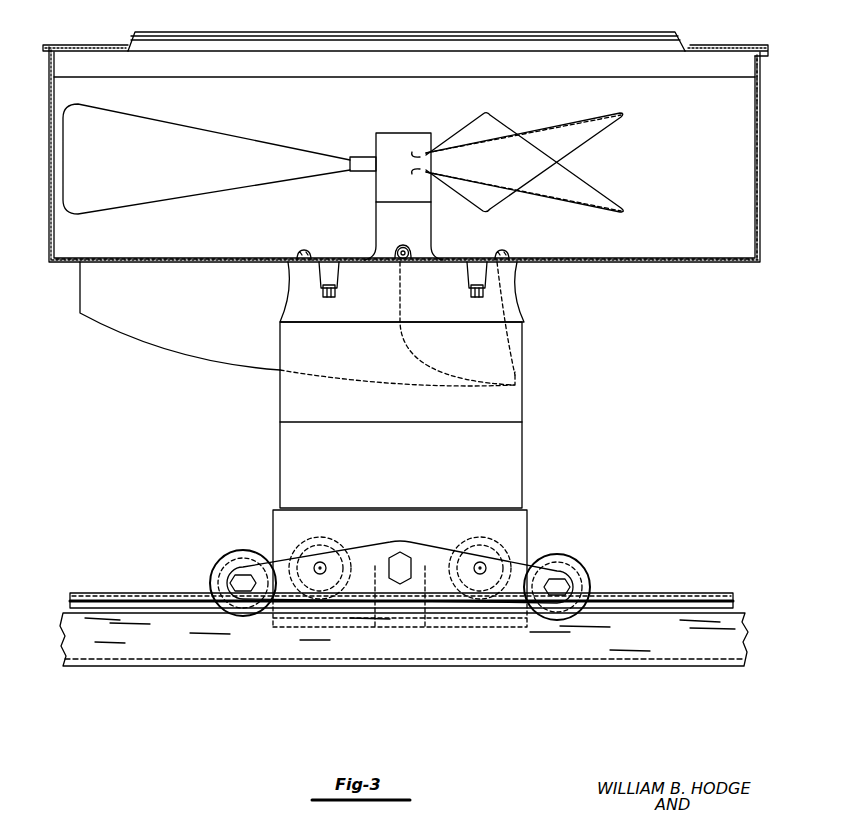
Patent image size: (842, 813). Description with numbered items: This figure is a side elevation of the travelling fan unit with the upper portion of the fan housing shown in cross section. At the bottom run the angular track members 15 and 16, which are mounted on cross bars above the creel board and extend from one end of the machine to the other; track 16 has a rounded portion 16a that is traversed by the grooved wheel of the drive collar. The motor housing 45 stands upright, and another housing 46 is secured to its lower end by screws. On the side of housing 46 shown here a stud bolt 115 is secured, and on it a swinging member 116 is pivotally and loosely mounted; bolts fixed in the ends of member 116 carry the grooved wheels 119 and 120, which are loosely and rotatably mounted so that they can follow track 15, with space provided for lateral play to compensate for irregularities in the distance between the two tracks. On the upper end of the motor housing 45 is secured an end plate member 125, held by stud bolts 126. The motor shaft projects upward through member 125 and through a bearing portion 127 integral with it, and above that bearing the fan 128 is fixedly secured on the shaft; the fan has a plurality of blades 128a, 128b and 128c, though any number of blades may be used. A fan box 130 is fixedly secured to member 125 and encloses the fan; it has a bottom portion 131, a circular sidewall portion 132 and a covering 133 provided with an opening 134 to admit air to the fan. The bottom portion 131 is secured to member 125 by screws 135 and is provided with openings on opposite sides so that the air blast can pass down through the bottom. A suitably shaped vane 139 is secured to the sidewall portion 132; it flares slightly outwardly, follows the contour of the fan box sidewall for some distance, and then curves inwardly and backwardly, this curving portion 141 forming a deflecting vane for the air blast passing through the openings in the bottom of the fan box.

The angular track member 15 is at (72, 632).
The angular track member 16 is at (401, 582).
The rounded portion of track 16a is at (95, 600).
The motor housing 45 is at (508, 478).
The housing 46 is at (520, 535).
The stud bolt 115 is at (401, 563).
The swinging member 116 is at (382, 528).
The grooved wheel 119 is at (585, 580).
The grooved wheel 120 is at (224, 562).
The end plate member of motor housing 125 is at (512, 304).
The stud bolt 126 is at (327, 297).
The bearing portion 127 is at (422, 234).
The fan 128 is at (365, 155).
The fan blade 128a is at (208, 188).
The fan blade 128b is at (608, 117).
The fan blade 128c is at (608, 209).
The fan box 130 is at (405, 148).
The bottom portion of fan box 131 is at (664, 243).
The circular sidewall portion 132 is at (755, 189).
The covering 133 is at (712, 50).
The opening 134 is at (347, 12).
The screw 135 is at (336, 232).
The vane 139 is at (212, 349).
The inwardly and backwardly curving portion 141 is at (518, 379).